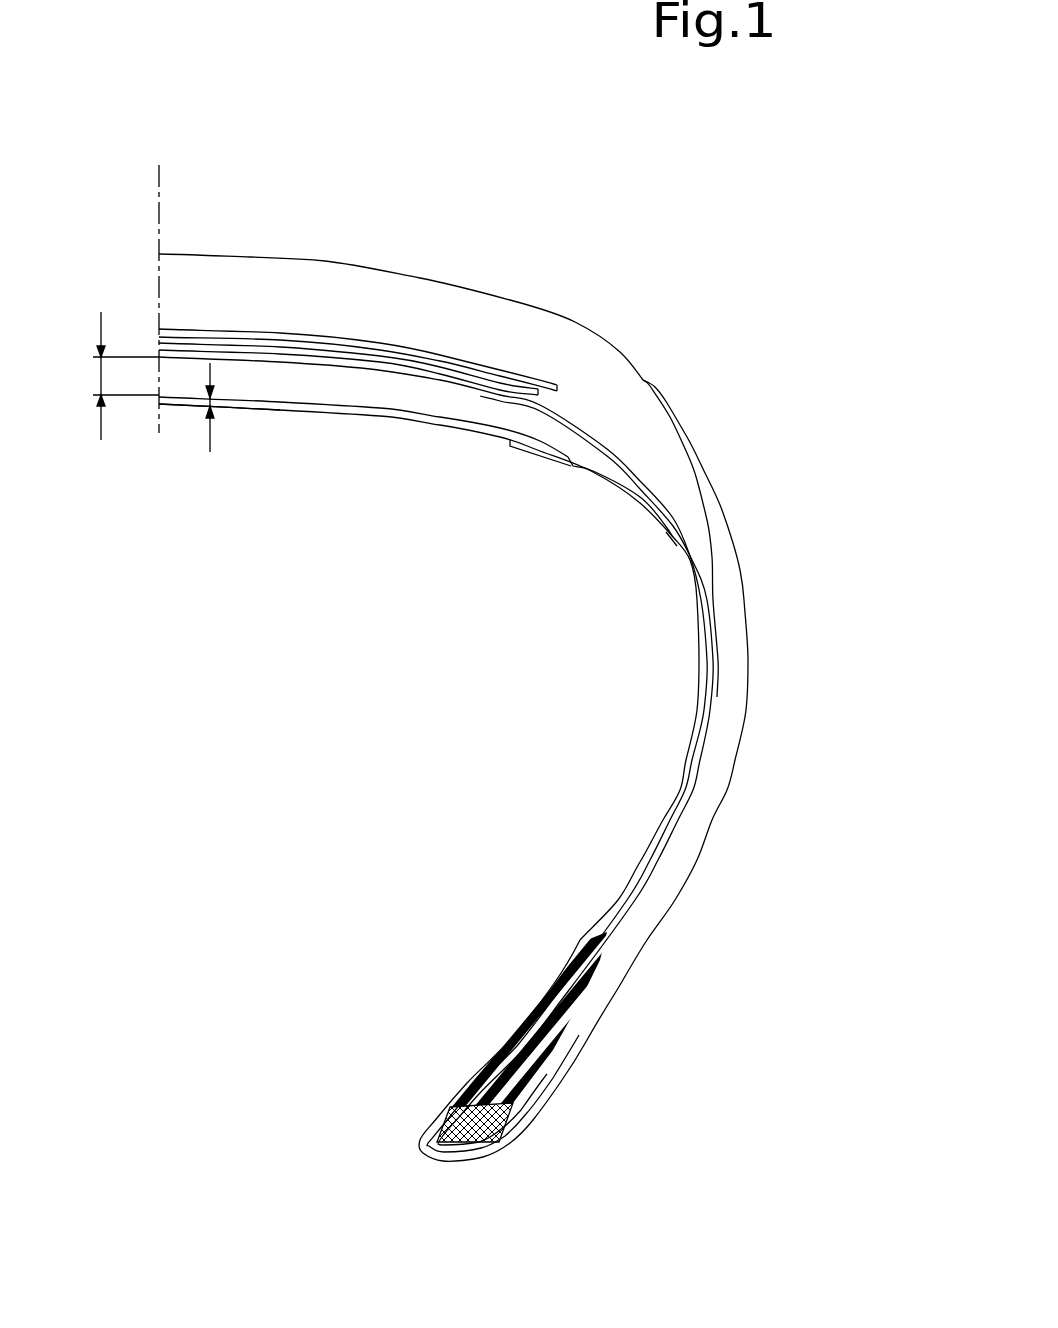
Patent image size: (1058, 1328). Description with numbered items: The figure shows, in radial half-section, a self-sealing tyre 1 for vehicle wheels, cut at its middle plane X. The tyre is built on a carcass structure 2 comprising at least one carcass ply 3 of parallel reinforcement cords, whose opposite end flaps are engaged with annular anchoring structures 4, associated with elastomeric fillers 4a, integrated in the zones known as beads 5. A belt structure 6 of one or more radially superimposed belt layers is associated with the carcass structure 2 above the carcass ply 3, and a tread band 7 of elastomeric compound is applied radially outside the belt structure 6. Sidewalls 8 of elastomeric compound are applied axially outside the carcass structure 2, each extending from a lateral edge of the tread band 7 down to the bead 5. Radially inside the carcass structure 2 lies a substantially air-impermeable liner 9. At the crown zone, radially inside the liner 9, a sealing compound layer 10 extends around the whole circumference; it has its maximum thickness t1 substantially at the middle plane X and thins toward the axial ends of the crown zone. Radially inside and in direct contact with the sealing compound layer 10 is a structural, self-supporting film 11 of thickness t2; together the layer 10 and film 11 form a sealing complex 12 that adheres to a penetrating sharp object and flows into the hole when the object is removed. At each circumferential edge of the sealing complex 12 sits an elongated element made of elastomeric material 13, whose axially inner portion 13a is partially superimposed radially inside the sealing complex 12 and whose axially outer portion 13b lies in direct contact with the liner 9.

The self-sealing tyre 1 is at (308, 775).
The carcass structure 2 is at (610, 443).
The carcass ply 3 is at (515, 400).
The annular anchoring structure 4 is at (466, 1145).
The elastomeric filler 4a is at (538, 1022).
The bead 5 is at (580, 1132).
The belt structure 6 is at (492, 362).
The tread band 7 is at (325, 260).
The sidewall 8 is at (746, 710).
The liner 9 is at (699, 697).
The sealing compound layer 10 is at (290, 387).
The structural film 11 is at (358, 413).
The sealing complex 12 is at (172, 425).
The elongated element made of elastomeric material 13 is at (533, 452).
The axially inner portion 13a is at (592, 468).
The axially outer portion 13b is at (668, 534).
The middle plane X is at (161, 190).
The maximum thickness t1 is at (96, 373).
The thickness t2 is at (210, 441).